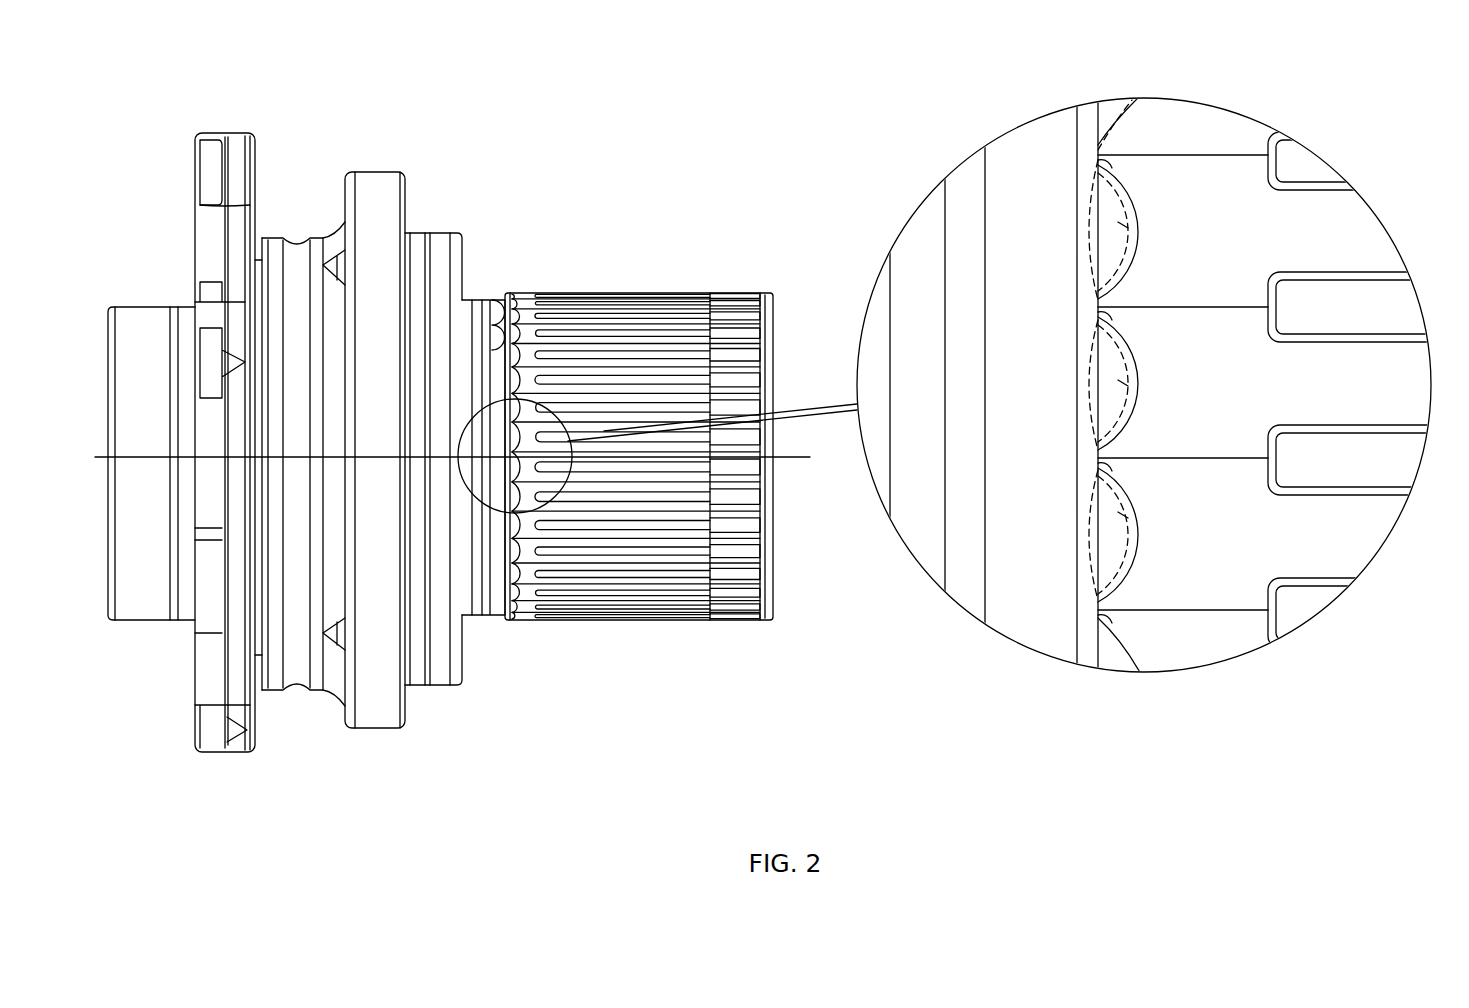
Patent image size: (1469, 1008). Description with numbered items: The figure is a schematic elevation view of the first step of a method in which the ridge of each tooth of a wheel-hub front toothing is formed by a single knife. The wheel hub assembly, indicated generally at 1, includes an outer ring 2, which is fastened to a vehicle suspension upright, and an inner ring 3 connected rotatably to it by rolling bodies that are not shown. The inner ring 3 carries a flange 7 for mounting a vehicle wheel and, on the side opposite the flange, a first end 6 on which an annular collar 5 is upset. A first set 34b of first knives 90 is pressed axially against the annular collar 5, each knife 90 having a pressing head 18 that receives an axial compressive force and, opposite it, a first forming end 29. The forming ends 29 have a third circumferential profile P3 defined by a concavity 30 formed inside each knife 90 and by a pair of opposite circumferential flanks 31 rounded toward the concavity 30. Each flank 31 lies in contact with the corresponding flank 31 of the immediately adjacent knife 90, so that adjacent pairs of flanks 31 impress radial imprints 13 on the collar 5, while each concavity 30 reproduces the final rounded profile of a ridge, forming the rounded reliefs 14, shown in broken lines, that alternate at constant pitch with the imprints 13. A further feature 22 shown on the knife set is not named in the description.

The bicycle hub assembly 1 is at (418, 123).
The outer ring 2 is at (316, 682).
The inner ring 3 is at (480, 630).
The annular collar 5 is at (510, 318).
The first end 6 is at (517, 633).
The flange 7 is at (223, 647).
The imprints 13 is at (1110, 132).
The reliefs 14 is at (1080, 256).
The pressing heads 18 is at (772, 370).
The second axial portion 22 is at (770, 411).
The first forming ends 29 is at (536, 345).
The concavity 30 is at (1112, 196).
The circumferential flanks 31 is at (1120, 170).
The first set 34b is at (801, 643).
The first knives 90 is at (682, 352).
The third circumferential profile P3 is at (1147, 236).